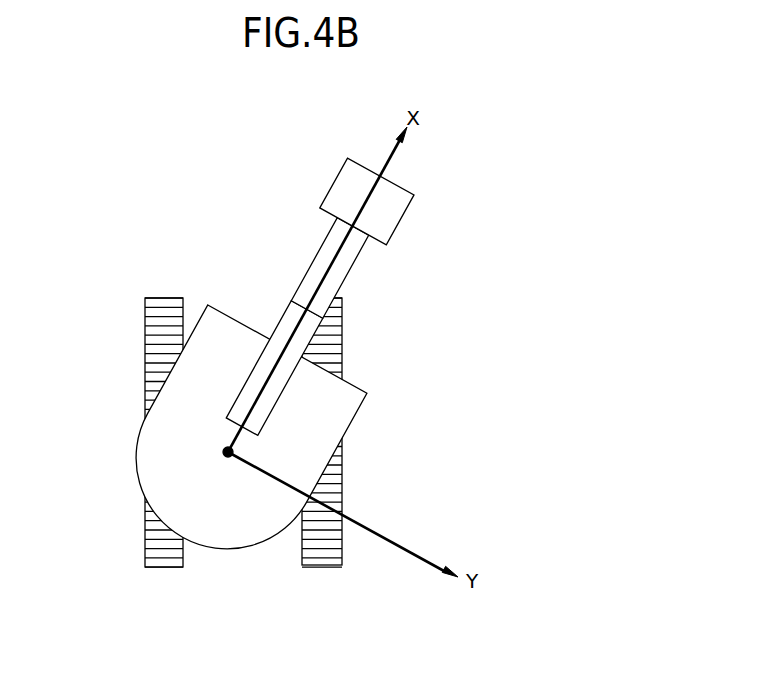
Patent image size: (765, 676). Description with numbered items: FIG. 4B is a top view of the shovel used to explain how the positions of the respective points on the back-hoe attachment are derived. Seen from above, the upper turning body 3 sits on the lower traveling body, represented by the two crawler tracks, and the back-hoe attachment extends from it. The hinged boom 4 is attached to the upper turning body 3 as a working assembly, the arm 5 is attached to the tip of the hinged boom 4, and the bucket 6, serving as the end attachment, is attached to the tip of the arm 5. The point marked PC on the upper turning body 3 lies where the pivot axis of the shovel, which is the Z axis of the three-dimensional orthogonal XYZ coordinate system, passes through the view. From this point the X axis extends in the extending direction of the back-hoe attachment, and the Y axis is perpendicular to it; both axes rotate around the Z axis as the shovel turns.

The upper turning body 3 is at (347, 417).
The hinged boom 4 is at (288, 323).
The arm 5 is at (332, 228).
The bucket 6 is at (395, 215).
The pivot center PC is at (226, 452).